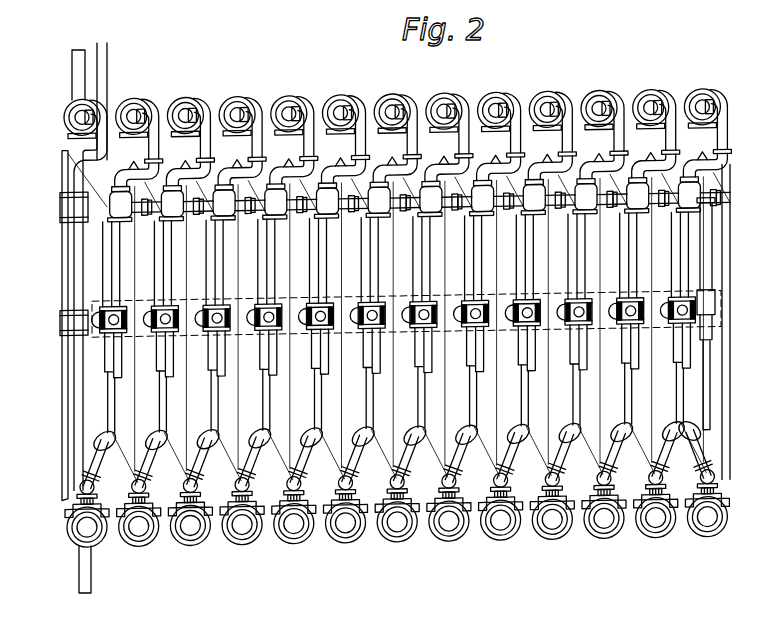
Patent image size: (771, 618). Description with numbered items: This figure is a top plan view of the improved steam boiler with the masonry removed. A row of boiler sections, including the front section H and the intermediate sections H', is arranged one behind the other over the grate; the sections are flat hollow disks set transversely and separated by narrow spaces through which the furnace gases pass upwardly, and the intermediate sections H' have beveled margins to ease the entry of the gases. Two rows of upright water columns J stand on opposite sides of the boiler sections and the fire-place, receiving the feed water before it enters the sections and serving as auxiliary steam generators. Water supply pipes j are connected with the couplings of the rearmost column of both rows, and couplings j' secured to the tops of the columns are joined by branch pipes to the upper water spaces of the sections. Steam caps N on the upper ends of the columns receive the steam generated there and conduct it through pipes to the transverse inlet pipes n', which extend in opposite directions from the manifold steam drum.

The water supply pipes j is at (90, 75).
The couplings j' is at (357, 327).
The water columns J is at (372, 322).
The steam caps N is at (542, 103).
The transverse inlet pipes n' is at (441, 272).
The intermediate boiler section H' is at (440, 328).
The front boiler section H is at (697, 314).